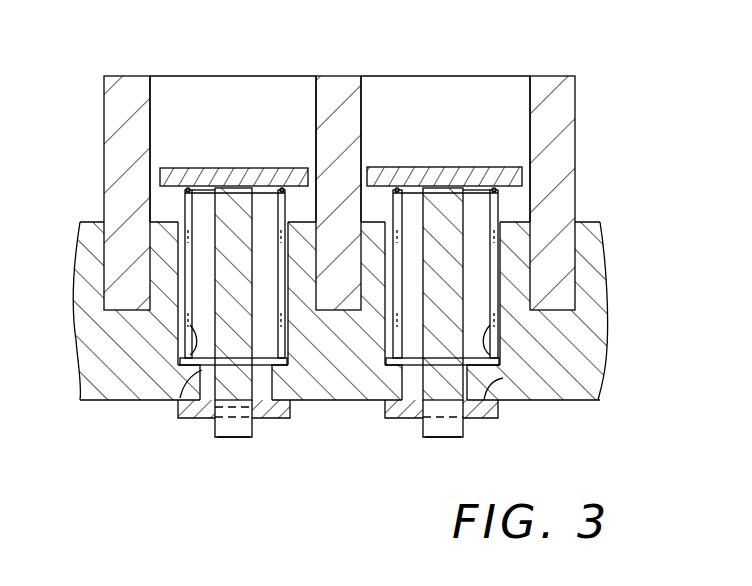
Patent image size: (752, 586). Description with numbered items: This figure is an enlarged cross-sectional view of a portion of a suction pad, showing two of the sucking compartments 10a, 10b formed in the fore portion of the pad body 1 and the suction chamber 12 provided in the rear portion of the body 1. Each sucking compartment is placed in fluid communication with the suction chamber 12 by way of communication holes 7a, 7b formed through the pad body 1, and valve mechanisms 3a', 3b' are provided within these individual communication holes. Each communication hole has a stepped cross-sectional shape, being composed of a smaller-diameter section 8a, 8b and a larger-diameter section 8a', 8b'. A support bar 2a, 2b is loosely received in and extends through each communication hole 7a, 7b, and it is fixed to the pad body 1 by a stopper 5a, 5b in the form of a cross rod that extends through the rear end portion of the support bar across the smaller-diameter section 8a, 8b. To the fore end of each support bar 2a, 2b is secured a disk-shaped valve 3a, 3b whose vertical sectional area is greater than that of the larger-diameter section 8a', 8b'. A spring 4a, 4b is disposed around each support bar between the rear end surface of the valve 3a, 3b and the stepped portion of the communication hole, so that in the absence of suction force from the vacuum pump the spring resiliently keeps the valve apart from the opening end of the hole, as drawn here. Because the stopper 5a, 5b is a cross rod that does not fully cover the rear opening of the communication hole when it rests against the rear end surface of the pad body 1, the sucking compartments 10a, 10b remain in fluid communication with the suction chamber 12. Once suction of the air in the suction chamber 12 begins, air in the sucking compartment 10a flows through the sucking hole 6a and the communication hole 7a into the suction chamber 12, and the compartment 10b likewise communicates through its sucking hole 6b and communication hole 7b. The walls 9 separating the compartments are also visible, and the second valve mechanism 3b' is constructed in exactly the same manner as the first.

The pad body 1 is at (585, 300).
The support bar 2a is at (463, 425).
The support bar 2b is at (267, 418).
The disk-shaped valve 3a is at (444, 150).
The disk-shaped valve 3b is at (236, 105).
The valve mechanism 3a' is at (412, 456).
The valve mechanism 3b' is at (230, 458).
The spring 4a is at (497, 205).
The spring 4b is at (187, 212).
The stopper 5a is at (392, 420).
The stopper 5b is at (205, 420).
The sucking hole 6a is at (474, 226).
The sucking hole 6b is at (202, 226).
The communication hole 7a is at (540, 397).
The communication hole 7b is at (143, 398).
The smaller-diameter section 8a is at (514, 422).
The smaller-diameter section 8b is at (179, 413).
The larger-diameter section 8a' is at (572, 341).
The larger-diameter section 8b' is at (271, 377).
The wall 9 is at (120, 145).
The sucking compartment 10a is at (512, 103).
The sucking compartment 10b is at (200, 93).
The suction chamber 12 is at (293, 447).